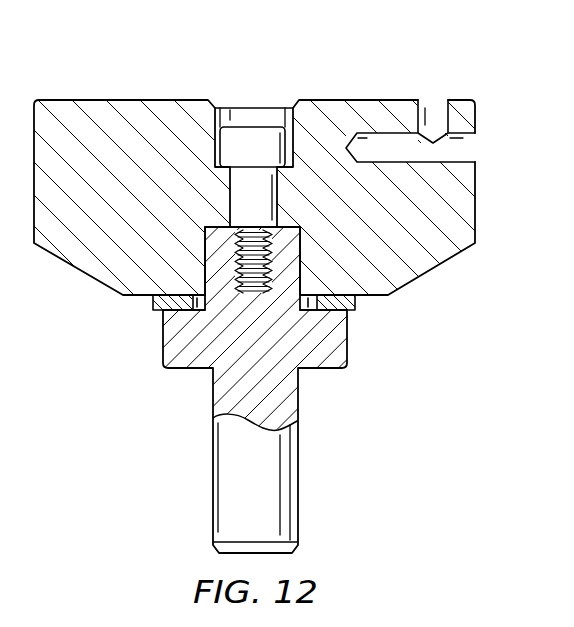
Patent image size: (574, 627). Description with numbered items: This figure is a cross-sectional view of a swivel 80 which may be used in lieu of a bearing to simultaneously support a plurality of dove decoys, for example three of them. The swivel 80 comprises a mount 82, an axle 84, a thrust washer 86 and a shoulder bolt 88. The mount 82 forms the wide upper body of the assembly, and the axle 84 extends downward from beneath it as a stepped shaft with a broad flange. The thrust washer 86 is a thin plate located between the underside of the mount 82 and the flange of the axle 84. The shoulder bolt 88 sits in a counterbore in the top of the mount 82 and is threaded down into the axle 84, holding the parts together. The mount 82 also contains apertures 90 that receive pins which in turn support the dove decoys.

The swivel 80 is at (287, 282).
The mount 82 is at (477, 212).
The axle 84 is at (297, 468).
The thrust washer 86 is at (355, 303).
The shoulder bolt 88 is at (255, 125).
The apertures 90 is at (453, 162).